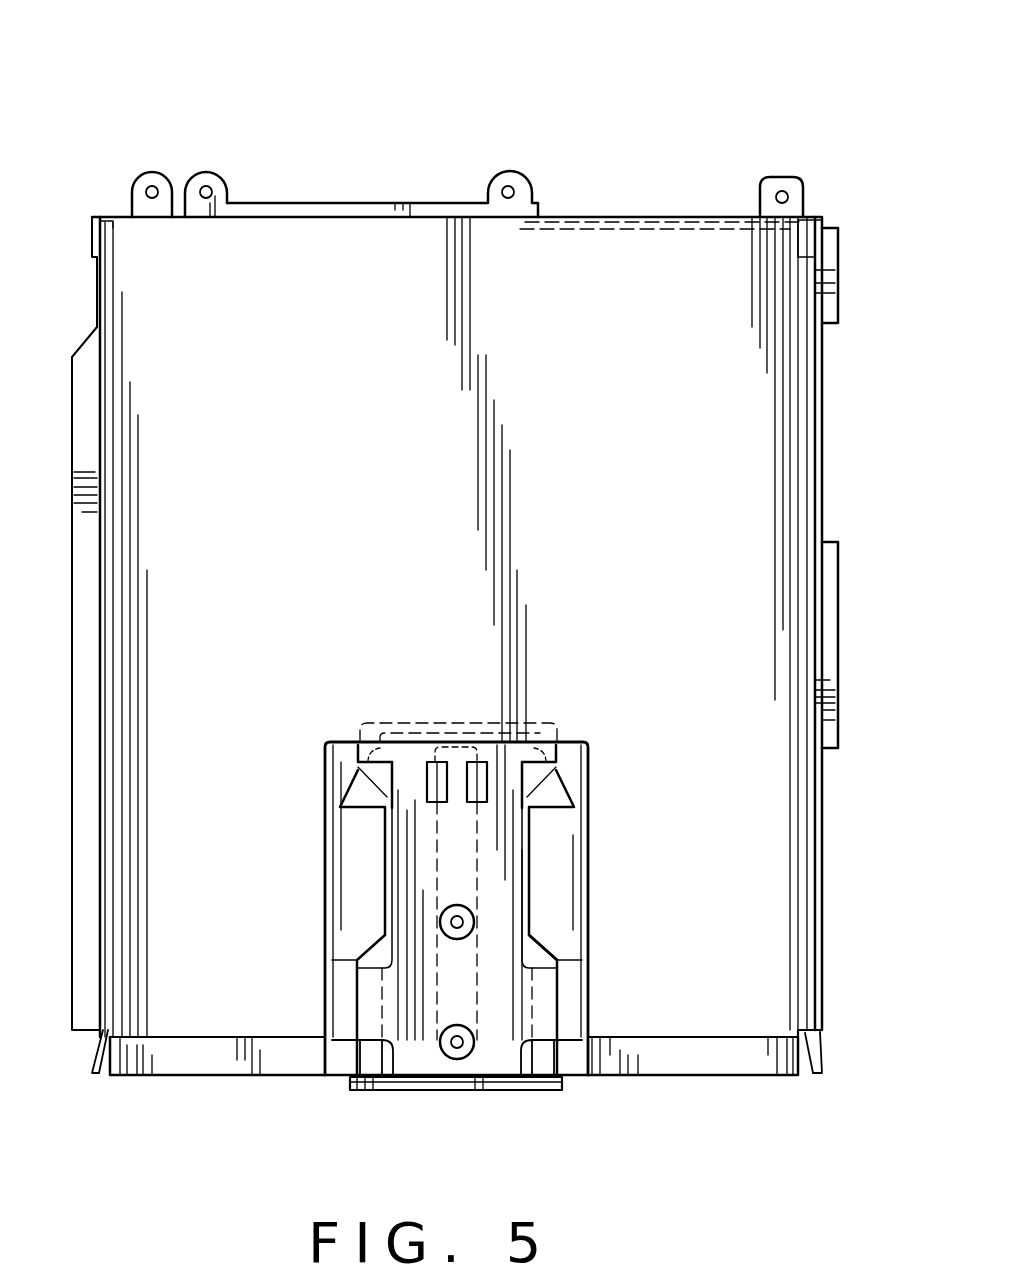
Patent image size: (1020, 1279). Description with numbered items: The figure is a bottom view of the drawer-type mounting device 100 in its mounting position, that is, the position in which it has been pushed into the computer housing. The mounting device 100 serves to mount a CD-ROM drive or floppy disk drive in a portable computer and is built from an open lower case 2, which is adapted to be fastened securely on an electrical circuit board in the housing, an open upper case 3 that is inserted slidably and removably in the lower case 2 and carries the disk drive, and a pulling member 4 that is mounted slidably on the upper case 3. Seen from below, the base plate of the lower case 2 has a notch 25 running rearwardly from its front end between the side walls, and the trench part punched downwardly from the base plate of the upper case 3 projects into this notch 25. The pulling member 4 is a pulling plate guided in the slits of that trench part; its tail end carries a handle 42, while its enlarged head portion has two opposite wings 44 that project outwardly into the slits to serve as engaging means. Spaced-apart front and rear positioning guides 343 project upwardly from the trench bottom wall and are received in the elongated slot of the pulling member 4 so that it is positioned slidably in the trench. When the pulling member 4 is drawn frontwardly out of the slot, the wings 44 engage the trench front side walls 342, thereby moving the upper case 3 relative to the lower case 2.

The drawer-type mounting device 100 is at (390, 142).
The lower case 2 is at (835, 368).
The upper case 3 is at (330, 1080).
The pulling member 4 is at (372, 887).
The notch 25 is at (590, 883).
The handle 42 is at (438, 1080).
The wings 44 is at (372, 812).
The trench front side walls 342 is at (550, 975).
The positioning guides 343 is at (463, 1048).